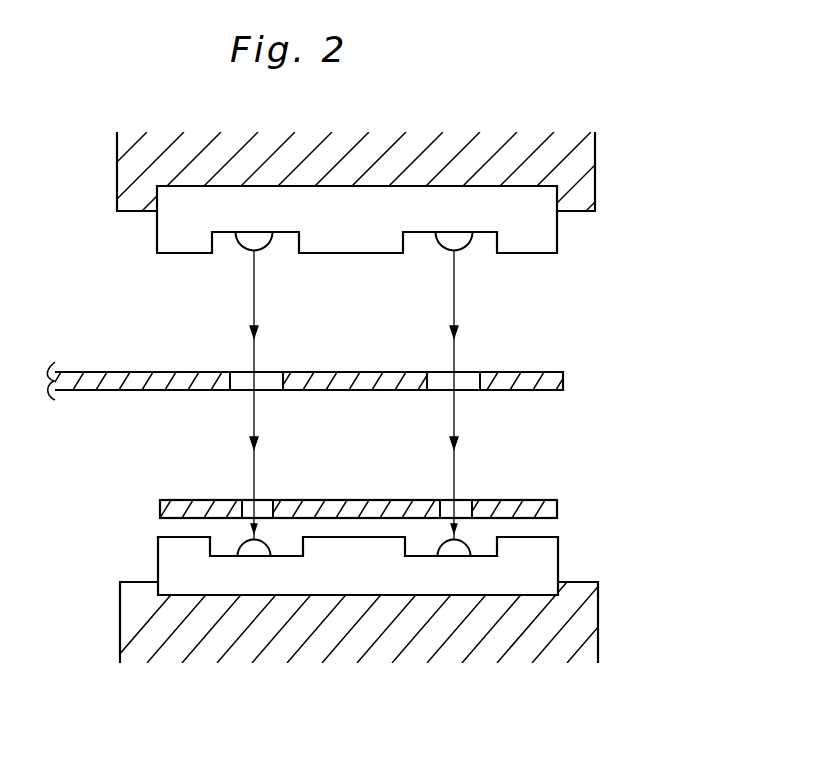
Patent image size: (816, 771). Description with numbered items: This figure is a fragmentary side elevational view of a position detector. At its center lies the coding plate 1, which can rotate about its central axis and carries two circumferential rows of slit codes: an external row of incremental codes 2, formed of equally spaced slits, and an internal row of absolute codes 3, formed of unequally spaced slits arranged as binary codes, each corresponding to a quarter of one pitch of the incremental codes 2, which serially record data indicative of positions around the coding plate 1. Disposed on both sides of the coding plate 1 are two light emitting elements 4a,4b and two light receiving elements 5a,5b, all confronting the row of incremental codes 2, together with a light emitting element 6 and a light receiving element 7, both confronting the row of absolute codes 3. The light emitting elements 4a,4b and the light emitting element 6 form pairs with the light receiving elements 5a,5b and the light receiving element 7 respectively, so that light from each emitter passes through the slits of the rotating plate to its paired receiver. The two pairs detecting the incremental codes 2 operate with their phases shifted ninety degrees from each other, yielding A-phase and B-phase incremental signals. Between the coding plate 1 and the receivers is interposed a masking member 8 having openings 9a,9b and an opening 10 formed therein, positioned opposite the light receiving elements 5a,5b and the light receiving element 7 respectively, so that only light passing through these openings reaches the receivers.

The coding plate 1 is at (113, 372).
The incremental codes 2 is at (472, 372).
The absolute codes 3 is at (270, 378).
The light emitting elements 4a,4b is at (462, 241).
The light receiving elements 5a,5b is at (465, 546).
The light emitting element 6 is at (243, 243).
The light receiving element 7 is at (250, 557).
The masking member 8 is at (527, 502).
The openings 9a,9b is at (462, 503).
The opening 10 is at (250, 500).